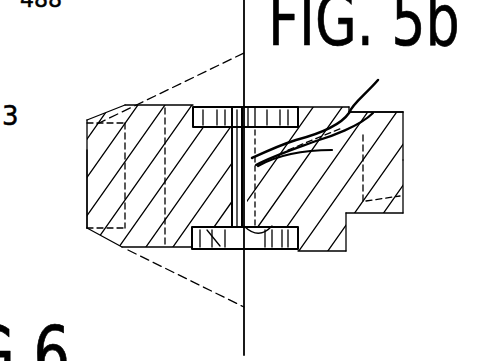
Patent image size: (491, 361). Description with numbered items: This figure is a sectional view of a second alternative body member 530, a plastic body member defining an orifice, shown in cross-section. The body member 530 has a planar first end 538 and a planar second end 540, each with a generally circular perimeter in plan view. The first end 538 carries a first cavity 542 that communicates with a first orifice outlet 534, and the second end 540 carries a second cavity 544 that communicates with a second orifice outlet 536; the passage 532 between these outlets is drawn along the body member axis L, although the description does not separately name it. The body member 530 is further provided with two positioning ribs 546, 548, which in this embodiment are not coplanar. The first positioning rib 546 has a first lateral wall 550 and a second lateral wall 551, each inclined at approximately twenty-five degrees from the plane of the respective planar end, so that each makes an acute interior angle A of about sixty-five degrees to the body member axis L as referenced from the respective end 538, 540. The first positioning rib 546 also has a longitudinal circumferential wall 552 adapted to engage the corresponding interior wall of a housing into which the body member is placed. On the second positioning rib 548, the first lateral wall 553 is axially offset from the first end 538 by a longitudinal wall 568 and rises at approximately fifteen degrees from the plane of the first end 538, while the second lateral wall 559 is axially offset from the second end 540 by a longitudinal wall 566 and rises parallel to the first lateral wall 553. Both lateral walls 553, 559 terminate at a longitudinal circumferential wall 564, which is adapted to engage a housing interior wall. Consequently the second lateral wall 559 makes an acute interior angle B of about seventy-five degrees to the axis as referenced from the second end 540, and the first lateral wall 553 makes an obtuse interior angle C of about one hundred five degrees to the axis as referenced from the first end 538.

The second alternative body member 530 is at (59, 138).
The first lateral wall 550 is at (97, 117).
The longitudinal circumferential wall 552 is at (87, 180).
The first positioning rib 546 is at (88, 193).
The second lateral wall 551 is at (106, 239).
The second end 540 is at (180, 258).
The second cavity 544 is at (170, 250).
The second orifice outlet 536 is at (255, 207).
The shaft 532 is at (257, 176).
The first cavity 542 is at (217, 107).
The first orifice outlet 534 is at (256, 114).
The first end 538 is at (183, 106).
The longitudinal wall 568 is at (334, 105).
The first lateral wall 553 is at (355, 113).
The second positioning rib 548 is at (404, 118).
The longitudinal circumferential wall 564 is at (404, 148).
The second lateral wall 559 is at (372, 214).
The longitudinal wall 566 is at (348, 238).
The obtuse interior angle C is at (314, 139).
The acute interior angle B is at (263, 252).
The body member axis L is at (244, 12).
The acute interior angle A is at (241, 63).